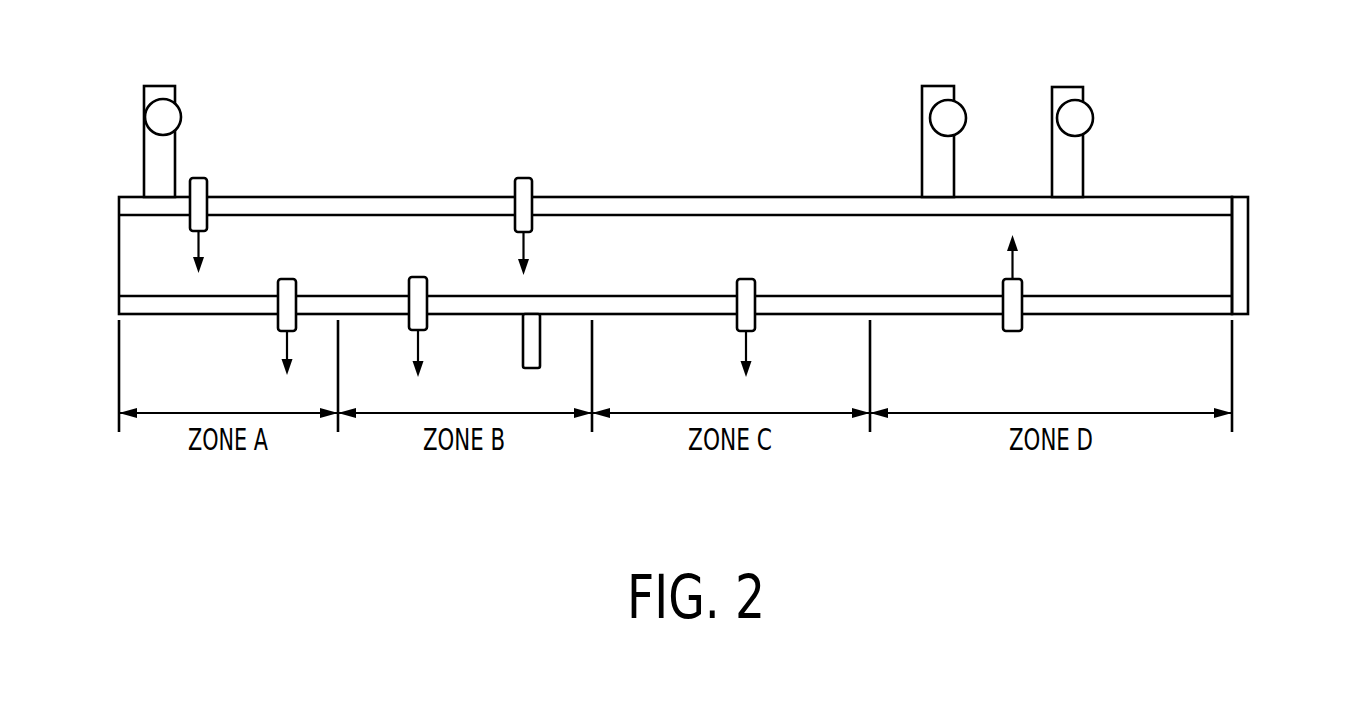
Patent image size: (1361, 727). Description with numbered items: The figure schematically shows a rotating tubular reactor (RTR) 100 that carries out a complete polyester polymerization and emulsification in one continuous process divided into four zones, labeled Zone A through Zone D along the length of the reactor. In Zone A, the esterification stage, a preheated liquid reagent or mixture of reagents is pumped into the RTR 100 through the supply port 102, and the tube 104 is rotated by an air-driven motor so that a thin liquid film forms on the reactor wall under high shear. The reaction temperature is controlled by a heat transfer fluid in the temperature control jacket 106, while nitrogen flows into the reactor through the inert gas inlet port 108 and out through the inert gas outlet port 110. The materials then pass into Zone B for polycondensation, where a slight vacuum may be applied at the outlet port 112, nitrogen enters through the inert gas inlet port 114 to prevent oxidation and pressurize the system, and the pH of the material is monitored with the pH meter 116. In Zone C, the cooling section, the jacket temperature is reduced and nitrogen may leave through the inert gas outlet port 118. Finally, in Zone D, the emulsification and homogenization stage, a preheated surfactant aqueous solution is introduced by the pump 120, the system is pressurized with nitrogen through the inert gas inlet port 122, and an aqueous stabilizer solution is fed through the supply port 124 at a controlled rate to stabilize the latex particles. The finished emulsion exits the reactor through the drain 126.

The rotating tubular reactor 100 is at (714, 98).
The supply port 102 is at (144, 100).
The tube 104 is at (302, 225).
The temperature control jacket 106 is at (333, 205).
The inert gas inlet port 108 is at (198, 178).
The inert gas outlet port 110 is at (277, 322).
The outlet port 112 is at (427, 320).
The inert gas inlet port 114 is at (532, 188).
The pH meter 116 is at (540, 343).
The inert gas outlet port 118 is at (755, 322).
The pump 120 is at (922, 103).
The inert gas inlet port 122 is at (1022, 327).
The supply port 124 is at (1083, 153).
The drain 126 is at (1248, 263).